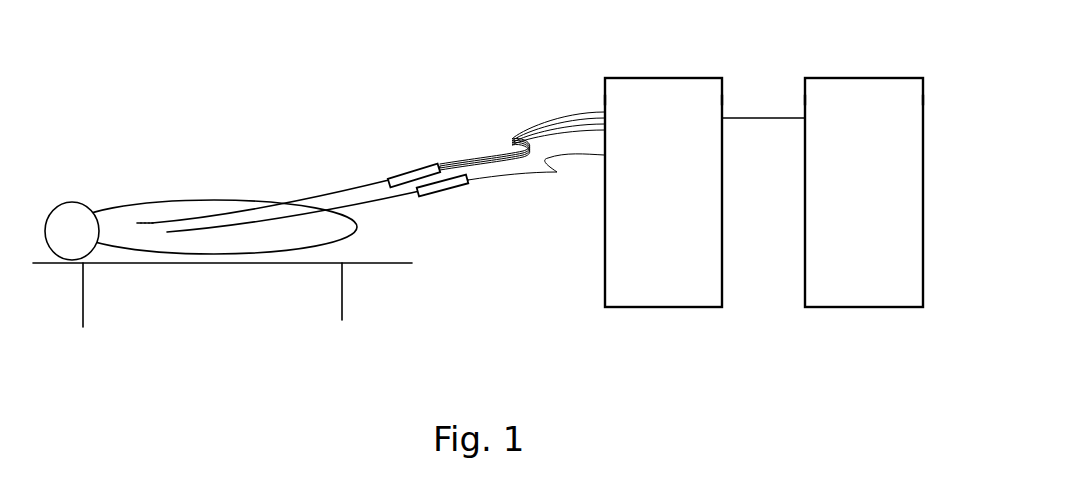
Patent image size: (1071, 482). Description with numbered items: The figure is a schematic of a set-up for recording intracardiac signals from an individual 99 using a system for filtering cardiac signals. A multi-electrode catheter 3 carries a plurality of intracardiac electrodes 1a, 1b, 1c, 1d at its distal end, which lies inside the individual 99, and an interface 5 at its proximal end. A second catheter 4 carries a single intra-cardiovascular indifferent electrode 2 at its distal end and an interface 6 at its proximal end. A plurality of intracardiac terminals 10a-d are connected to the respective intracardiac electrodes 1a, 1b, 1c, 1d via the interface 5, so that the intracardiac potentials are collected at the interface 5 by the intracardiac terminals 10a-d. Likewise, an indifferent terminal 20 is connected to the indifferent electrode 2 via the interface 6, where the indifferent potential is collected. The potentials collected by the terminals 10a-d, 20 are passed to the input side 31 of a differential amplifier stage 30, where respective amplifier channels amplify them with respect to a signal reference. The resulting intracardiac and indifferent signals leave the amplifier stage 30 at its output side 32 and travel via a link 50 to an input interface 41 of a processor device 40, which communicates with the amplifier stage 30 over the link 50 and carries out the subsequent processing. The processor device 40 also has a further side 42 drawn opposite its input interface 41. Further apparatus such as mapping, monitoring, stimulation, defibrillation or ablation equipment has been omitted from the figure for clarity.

The individual 99 is at (108, 227).
The intracardiac electrode 1a is at (138, 222).
The intracardiac electrode 1b is at (143, 222).
The intracardiac electrode 1c is at (147, 222).
The intracardiac electrode 1d is at (152, 222).
The intra-cardiovascular indifferent electrode 2 is at (175, 233).
The multi-electrode catheter 3 is at (310, 203).
The catheter 4 is at (383, 203).
The interface 5 is at (410, 177).
The interface 6 is at (443, 187).
The intracardiac terminals 10a-d is at (482, 157).
The indifferent terminal 20 is at (512, 175).
The differential amplifier stage 30 is at (657, 293).
The input side 31 is at (604, 100).
The output side 32 is at (723, 100).
The processor device 40 is at (862, 293).
The input interface 41 is at (804, 100).
The output of processing unit 42 is at (924, 100).
The link 50 is at (757, 119).